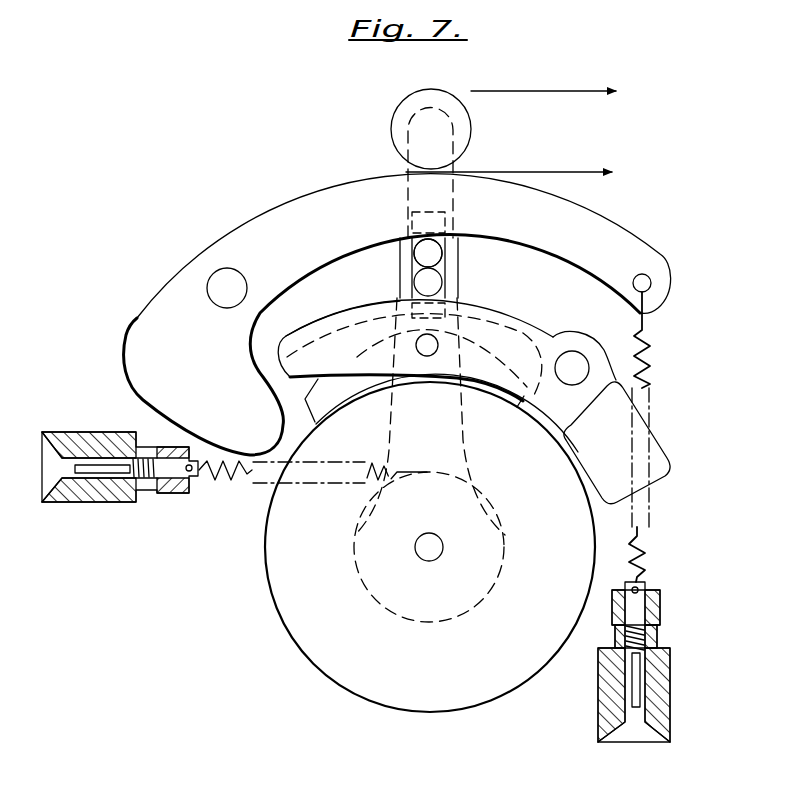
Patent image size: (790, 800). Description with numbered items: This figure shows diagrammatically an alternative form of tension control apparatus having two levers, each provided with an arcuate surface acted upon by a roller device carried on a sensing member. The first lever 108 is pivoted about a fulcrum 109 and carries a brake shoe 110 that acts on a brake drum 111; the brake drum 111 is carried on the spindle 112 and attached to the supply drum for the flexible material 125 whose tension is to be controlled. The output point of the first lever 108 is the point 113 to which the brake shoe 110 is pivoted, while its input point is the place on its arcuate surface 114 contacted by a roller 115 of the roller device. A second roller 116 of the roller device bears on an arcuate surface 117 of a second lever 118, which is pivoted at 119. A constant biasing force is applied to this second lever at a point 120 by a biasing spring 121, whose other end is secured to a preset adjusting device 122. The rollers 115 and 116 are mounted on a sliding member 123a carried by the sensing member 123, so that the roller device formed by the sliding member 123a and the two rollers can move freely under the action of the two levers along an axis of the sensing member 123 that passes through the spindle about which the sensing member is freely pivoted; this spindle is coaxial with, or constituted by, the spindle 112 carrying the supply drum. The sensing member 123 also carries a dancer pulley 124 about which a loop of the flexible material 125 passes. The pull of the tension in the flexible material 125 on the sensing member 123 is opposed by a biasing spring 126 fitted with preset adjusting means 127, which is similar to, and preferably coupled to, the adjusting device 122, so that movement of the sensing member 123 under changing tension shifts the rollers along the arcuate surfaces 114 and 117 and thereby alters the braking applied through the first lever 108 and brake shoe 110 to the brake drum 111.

The first lever 108 is at (538, 315).
The fulcrum 109 is at (573, 357).
The brake shoe 110 is at (357, 383).
The brake drum 111 is at (283, 590).
The spindle 112 is at (435, 542).
The point 113 is at (424, 353).
The arcuate surface 114 is at (362, 282).
The roller 115 is at (433, 283).
The second roller 116 is at (433, 254).
The arcuate surface 117 is at (518, 253).
The second lever 118 is at (277, 208).
The pivot 119 is at (216, 277).
The point 120 is at (650, 283).
The biasing spring 121 is at (647, 567).
The preset adjusting device 122 is at (667, 639).
The sensing member 123 is at (408, 172).
The sliding member 123a is at (411, 270).
The dancer pulley 124 is at (460, 106).
The flexible material 125 is at (534, 92).
The biasing spring 126 is at (313, 489).
The preset adjusting means 127 is at (88, 431).